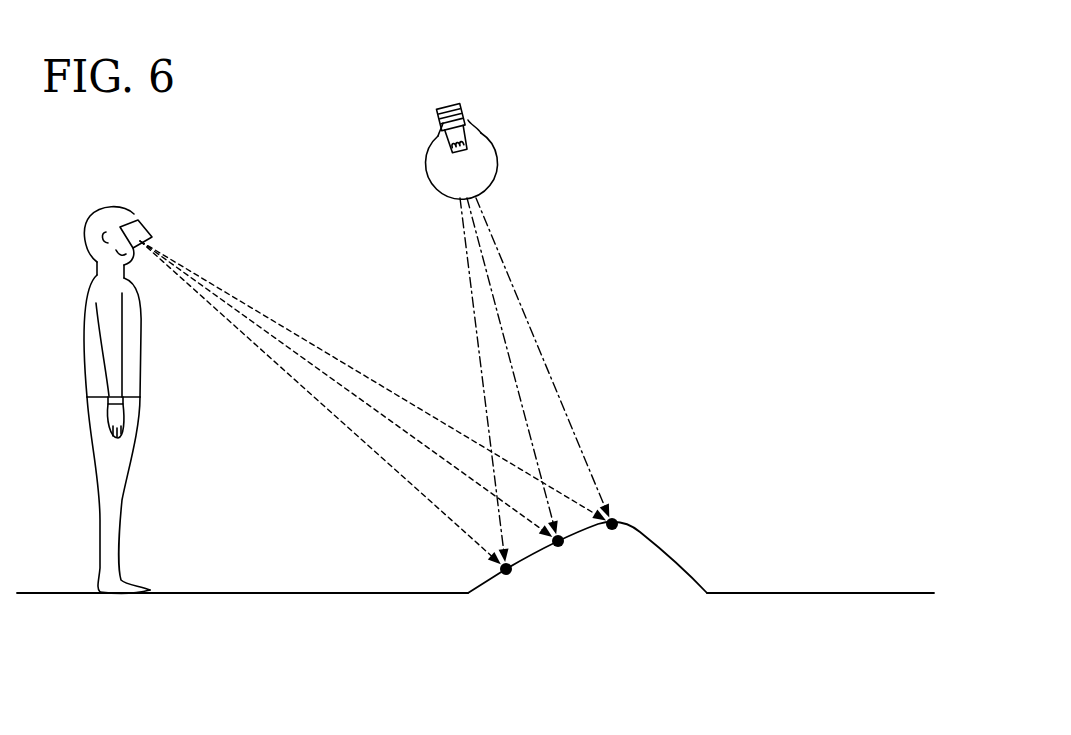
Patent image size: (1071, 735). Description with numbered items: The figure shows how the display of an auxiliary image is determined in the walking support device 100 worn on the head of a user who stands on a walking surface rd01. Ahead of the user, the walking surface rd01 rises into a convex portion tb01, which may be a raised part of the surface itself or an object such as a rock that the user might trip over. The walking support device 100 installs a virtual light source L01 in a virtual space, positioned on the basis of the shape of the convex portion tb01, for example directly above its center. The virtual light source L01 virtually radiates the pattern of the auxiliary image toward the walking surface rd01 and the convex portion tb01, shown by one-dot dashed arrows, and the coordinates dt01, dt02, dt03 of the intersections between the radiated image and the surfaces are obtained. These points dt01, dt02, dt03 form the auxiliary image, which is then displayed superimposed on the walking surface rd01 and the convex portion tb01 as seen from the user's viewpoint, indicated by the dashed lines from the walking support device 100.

The walking support device 100 is at (143, 218).
The virtual light source L01 is at (497, 156).
The walking surface rd01 is at (278, 594).
The convex portion tb01 is at (667, 577).
The intersection coordinate dt01 is at (506, 575).
The intersection coordinate dt02 is at (558, 547).
The intersection coordinate dt03 is at (612, 530).